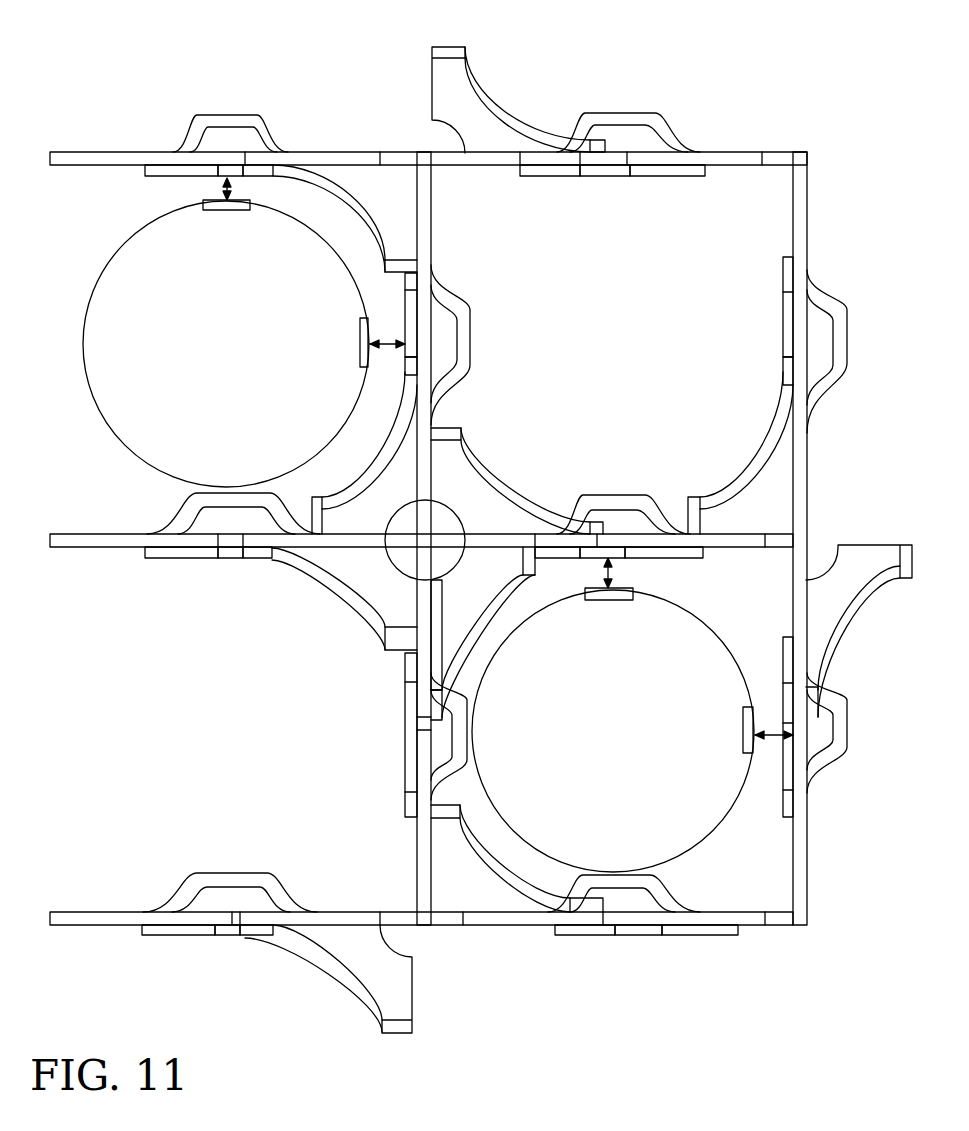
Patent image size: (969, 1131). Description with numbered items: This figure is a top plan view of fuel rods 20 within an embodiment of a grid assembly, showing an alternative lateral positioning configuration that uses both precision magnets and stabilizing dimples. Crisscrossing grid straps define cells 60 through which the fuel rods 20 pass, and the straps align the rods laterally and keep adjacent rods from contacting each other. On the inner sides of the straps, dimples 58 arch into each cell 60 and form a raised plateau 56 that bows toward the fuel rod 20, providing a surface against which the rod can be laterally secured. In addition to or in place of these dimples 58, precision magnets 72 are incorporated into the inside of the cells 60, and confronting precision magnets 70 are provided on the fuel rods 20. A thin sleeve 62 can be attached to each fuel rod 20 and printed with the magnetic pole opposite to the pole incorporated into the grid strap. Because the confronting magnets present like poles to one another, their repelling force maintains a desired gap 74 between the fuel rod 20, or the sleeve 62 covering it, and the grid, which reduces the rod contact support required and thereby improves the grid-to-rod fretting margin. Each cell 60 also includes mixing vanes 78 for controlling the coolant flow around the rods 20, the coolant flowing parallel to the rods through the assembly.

The fuel rod 20 is at (288, 227).
The raised plateau 56 is at (216, 112).
The dimple 58 is at (187, 133).
The cell 60 is at (275, 195).
The sleeve 62 is at (335, 245).
The precision magnet 70 is at (215, 198).
The precision magnet 72 is at (227, 167).
The gap 74 is at (274, 193).
The mixing vane 78 is at (360, 175).